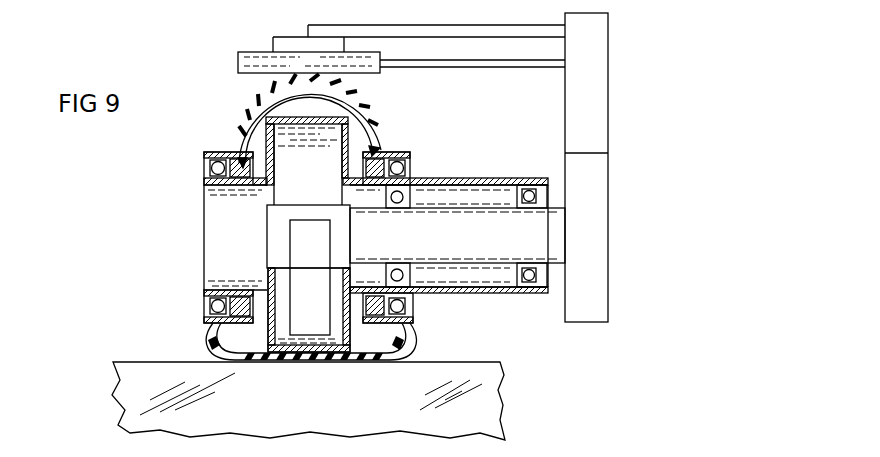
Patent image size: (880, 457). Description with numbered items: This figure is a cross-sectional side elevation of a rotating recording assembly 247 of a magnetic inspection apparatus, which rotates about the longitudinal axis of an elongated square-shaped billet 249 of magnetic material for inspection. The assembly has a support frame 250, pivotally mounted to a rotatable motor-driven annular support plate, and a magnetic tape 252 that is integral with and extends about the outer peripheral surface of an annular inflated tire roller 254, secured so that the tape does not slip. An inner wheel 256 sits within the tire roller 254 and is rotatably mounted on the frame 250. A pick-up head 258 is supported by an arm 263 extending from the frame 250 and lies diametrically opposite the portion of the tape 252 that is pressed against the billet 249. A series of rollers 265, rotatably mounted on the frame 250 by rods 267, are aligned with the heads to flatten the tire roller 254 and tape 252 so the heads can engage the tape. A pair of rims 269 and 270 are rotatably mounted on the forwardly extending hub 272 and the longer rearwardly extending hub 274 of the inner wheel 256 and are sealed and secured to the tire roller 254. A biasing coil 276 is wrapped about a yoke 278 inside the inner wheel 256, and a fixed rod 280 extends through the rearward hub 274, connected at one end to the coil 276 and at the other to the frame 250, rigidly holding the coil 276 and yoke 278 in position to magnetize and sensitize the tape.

The rotating recording assembly 247 is at (125, 213).
The billet 249 is at (500, 400).
The support frame 250 is at (598, 137).
The magnetic tape 252 is at (322, 80).
The tire roller 254 is at (377, 121).
The inner wheel 256 is at (320, 117).
The pick-up head 258 is at (288, 47).
The arm 263 is at (365, 28).
The rollers 265 is at (238, 63).
The rods 267 is at (555, 65).
The rim 269 is at (205, 154).
The rim 270 is at (398, 151).
The forwardly extending hub 272 is at (228, 287).
The rearwardly extending hub 274 is at (460, 290).
The biasing coil 276 is at (278, 212).
The yoke 278 is at (313, 325).
The fixed rod 280 is at (560, 240).